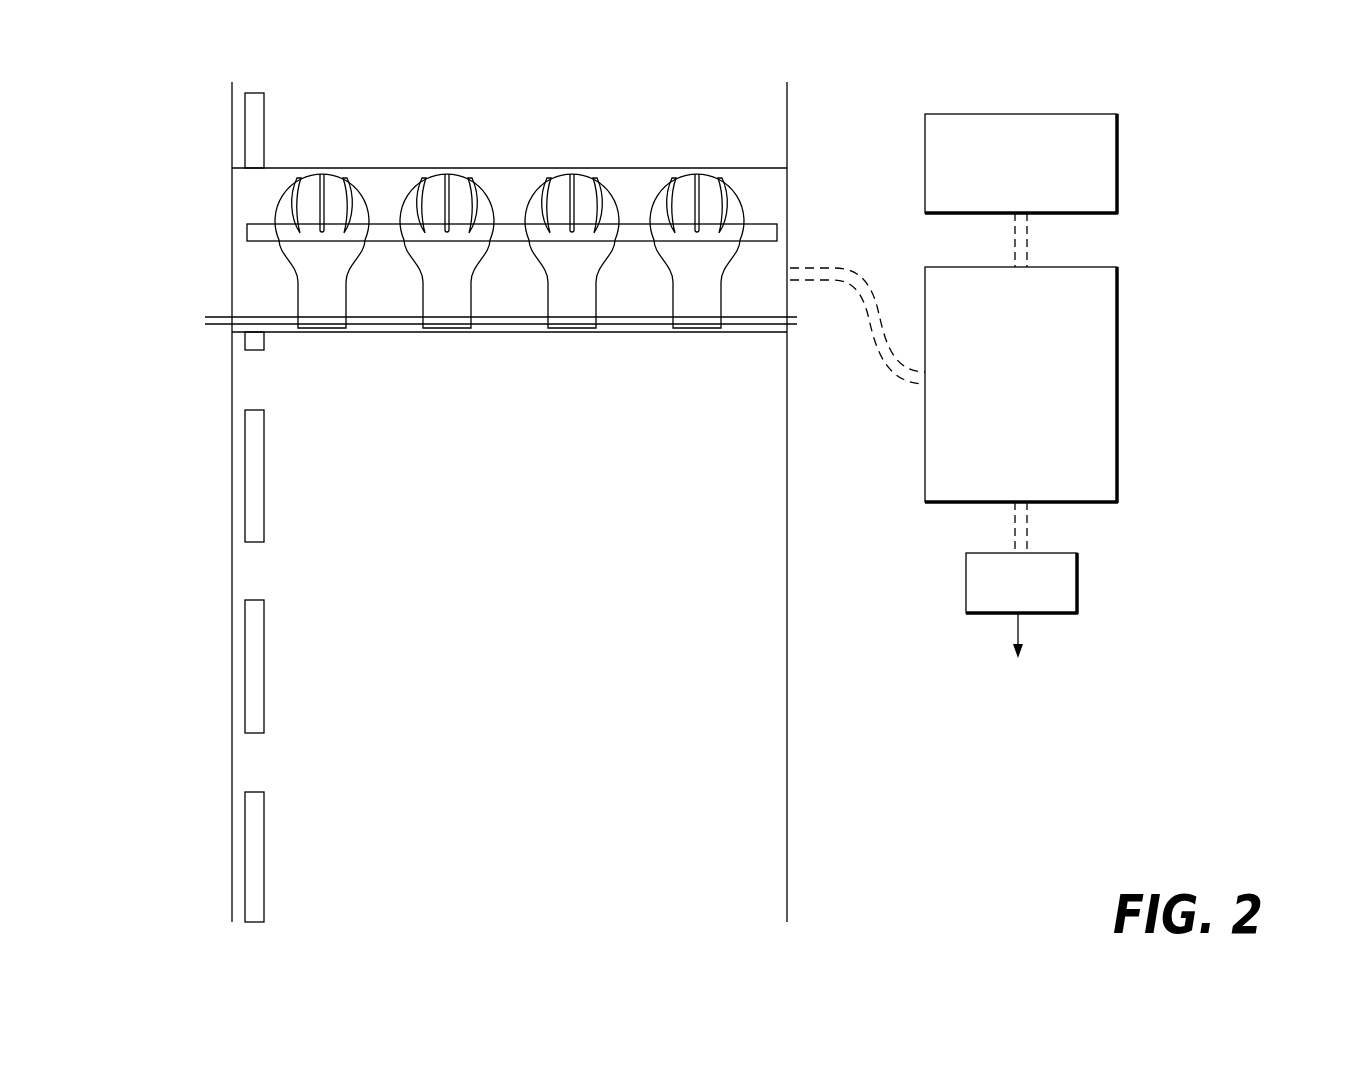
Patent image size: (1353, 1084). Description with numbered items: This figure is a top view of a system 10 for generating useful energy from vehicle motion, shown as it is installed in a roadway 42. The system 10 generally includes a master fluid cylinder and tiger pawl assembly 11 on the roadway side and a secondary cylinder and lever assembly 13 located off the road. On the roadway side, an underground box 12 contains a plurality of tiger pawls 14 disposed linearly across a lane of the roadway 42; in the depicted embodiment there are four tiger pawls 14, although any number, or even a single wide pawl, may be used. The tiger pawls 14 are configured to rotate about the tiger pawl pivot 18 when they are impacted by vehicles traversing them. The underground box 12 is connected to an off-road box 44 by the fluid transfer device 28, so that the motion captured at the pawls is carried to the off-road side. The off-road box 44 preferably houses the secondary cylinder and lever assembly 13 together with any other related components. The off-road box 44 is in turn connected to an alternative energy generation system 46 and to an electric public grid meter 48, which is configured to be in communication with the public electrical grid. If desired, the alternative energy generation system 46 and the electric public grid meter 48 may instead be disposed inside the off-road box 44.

The system for generating useful energy from vehicle motion 10 is at (1246, 125).
The master fluid cylinder and tiger pawl assembly 11 is at (182, 157).
The underground box 12 is at (765, 181).
The secondary cylinder and lever assembly 13 is at (1235, 494).
The tiger pawls 14 is at (703, 183).
The tiger pawl pivot 18 is at (220, 320).
The fluid transfer device 28 is at (866, 293).
The roadway 42 is at (760, 556).
The off-road box 44 is at (1117, 392).
The alternative energy generation system 46 is at (1117, 161).
The electric public grid meter 48 is at (1077, 582).